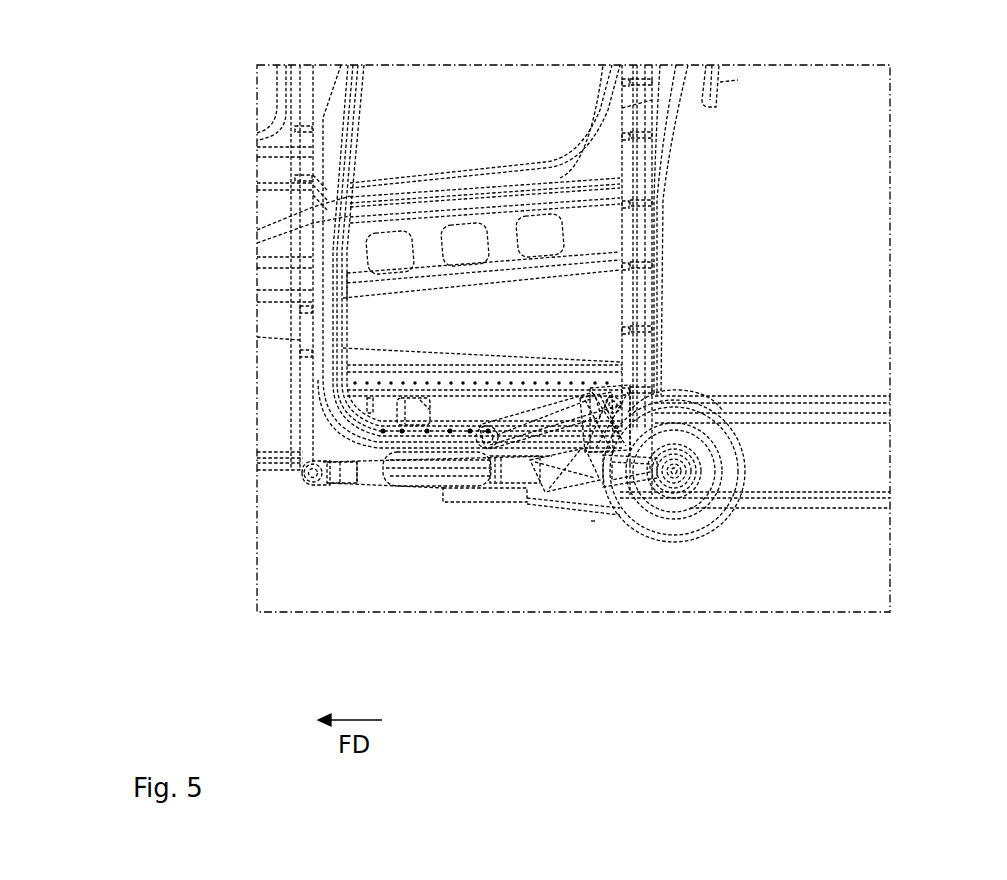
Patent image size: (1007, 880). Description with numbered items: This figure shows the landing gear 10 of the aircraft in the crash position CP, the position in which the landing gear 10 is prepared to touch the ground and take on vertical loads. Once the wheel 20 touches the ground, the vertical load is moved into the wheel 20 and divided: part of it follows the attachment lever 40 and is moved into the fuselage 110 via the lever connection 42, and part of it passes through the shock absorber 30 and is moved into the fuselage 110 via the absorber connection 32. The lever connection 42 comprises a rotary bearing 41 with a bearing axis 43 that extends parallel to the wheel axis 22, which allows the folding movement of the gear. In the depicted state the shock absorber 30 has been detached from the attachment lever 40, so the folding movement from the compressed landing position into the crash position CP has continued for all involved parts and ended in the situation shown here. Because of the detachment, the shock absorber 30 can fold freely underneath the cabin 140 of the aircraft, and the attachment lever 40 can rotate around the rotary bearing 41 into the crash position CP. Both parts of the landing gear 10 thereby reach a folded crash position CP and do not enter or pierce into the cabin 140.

The landing gear 10 is at (226, 523).
The wheel 20 is at (717, 517).
The wheel axis 22 is at (675, 490).
The shock absorber 30 is at (540, 500).
The absorber connection 32 is at (484, 490).
The attachment lever 40 is at (412, 490).
The rotary bearing 41 is at (302, 478).
The lever connection 42 is at (335, 488).
The bearing axis 43 is at (314, 485).
The crash position CP is at (594, 531).
The fuselage 110 is at (868, 470).
The cabin 140 is at (862, 122).